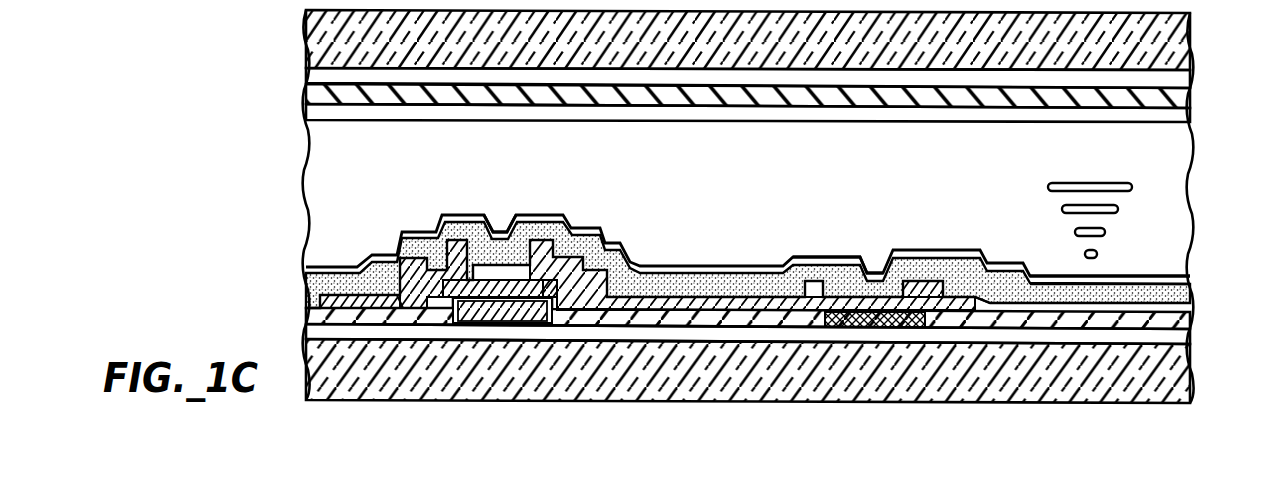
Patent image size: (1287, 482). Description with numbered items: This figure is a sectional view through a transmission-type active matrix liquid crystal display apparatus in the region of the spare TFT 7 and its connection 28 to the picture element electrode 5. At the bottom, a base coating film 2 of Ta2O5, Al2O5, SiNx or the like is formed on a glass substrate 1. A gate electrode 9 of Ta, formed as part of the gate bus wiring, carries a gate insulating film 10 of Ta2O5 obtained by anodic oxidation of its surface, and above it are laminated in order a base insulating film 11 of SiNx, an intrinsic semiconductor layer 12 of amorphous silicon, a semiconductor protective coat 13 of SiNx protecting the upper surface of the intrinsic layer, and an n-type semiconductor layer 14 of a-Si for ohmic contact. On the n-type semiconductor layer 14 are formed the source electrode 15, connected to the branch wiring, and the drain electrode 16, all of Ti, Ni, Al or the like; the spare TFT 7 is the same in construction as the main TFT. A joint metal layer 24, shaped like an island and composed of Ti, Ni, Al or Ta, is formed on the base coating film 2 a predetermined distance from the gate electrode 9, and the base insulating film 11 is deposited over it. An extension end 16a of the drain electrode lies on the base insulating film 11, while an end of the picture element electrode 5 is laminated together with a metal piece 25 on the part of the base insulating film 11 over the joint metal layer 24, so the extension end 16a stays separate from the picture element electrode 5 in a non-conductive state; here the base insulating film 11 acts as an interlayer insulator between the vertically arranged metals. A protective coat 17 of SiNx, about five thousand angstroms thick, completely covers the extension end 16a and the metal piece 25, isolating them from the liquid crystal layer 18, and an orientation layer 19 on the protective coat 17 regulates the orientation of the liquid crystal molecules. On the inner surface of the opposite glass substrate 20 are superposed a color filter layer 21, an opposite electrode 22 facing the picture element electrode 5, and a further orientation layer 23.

The glass substrate 1 is at (1192, 385).
The base coating film 2 is at (1192, 338).
The picture element electrode 5 is at (1192, 305).
The spare TFT 7 is at (502, 210).
The gate electrode 9 is at (592, 300).
The gate insulating film 10 is at (463, 278).
The base insulating film 11 is at (1192, 320).
The intrinsic semiconductor layer 12 is at (402, 290).
The semiconductor protective coat 13 is at (502, 268).
The n-type semiconductor layer 14 is at (450, 262).
The source electrode 15 is at (348, 300).
The drain electrode 16 is at (606, 252).
The extension end of drain electrode 16a is at (818, 290).
The protective coat 17 is at (1192, 292).
The liquid crystal layer 18 is at (1100, 186).
The orientation layer 19 is at (1192, 275).
The glass substrate 20 is at (1193, 45).
The color filter layer 21 is at (1193, 80).
The opposite electrode 22 is at (1193, 98).
The orientation layer 23 is at (1193, 121).
The joint metal layer 24 is at (913, 305).
The metal piece 25 is at (998, 303).
The connection 28 is at (877, 256).